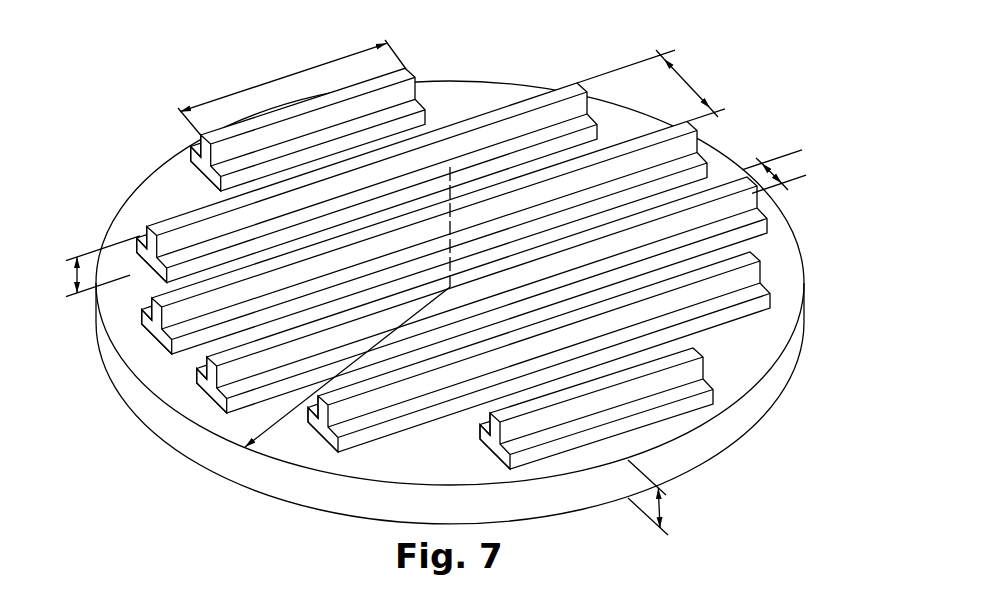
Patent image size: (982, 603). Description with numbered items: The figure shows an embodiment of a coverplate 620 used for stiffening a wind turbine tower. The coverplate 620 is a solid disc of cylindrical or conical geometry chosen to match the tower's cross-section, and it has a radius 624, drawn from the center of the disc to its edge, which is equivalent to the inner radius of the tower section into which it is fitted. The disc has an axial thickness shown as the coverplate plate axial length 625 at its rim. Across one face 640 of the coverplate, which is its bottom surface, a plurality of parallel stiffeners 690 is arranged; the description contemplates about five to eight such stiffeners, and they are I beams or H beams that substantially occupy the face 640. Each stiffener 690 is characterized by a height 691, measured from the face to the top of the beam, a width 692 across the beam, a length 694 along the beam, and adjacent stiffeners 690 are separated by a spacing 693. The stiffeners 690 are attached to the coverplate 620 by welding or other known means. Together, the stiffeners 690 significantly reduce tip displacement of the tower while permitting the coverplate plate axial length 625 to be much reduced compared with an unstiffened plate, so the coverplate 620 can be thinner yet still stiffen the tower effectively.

The coverplate 620 is at (133, 116).
The radius 624 is at (297, 410).
The coverplate plate axial length 625 is at (661, 508).
The face 640 is at (743, 352).
The stiffeners 690 is at (415, 80).
The height 691 is at (77, 257).
The width 692 is at (778, 178).
The spacing 693 is at (687, 84).
The length 694 is at (247, 88).